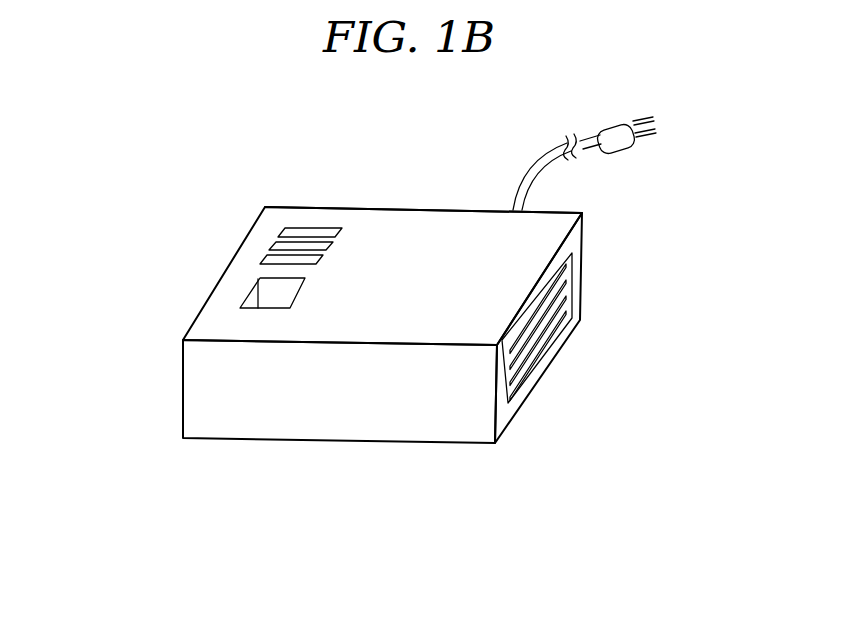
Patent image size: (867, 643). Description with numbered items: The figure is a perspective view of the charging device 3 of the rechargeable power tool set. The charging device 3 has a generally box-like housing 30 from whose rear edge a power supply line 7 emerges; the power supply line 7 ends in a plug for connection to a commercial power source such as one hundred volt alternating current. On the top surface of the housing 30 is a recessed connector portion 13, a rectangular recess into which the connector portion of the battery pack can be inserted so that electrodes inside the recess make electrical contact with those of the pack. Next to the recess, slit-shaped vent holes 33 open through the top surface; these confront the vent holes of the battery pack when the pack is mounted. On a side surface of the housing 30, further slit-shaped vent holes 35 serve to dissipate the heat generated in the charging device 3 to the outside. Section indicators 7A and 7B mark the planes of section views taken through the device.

The charging device 3 is at (389, 458).
The power supply line 7 is at (588, 135).
The recessed connector portion 13 is at (246, 293).
The housing 30 is at (418, 207).
The vent holes 33 is at (282, 258).
The vent holes 35 is at (558, 340).
The section line 7A is at (223, 240).
The section line 7B is at (182, 385).